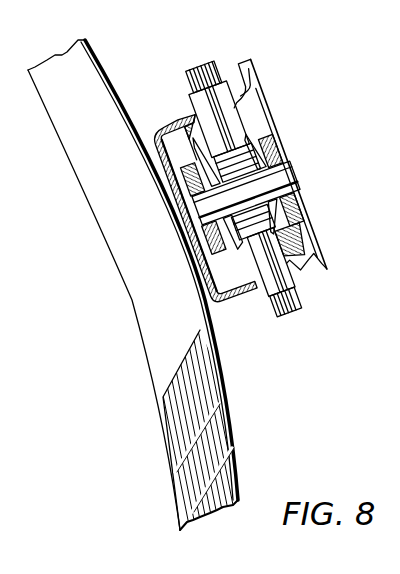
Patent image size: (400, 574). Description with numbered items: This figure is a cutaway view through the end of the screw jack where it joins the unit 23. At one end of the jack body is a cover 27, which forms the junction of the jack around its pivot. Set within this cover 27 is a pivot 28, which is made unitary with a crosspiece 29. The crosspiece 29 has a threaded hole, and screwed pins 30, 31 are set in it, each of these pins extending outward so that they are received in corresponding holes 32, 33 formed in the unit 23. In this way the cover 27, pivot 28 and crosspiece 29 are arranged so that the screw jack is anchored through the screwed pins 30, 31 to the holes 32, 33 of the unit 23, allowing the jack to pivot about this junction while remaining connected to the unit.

The unit 23 is at (265, 100).
The cover 27 is at (268, 152).
The pivot 28 is at (202, 205).
The crosspiece 29 is at (302, 204).
The screwed pin 30 is at (293, 247).
The screwed pin 31 is at (217, 93).
The hole 32 is at (189, 112).
The hole 33 is at (306, 272).